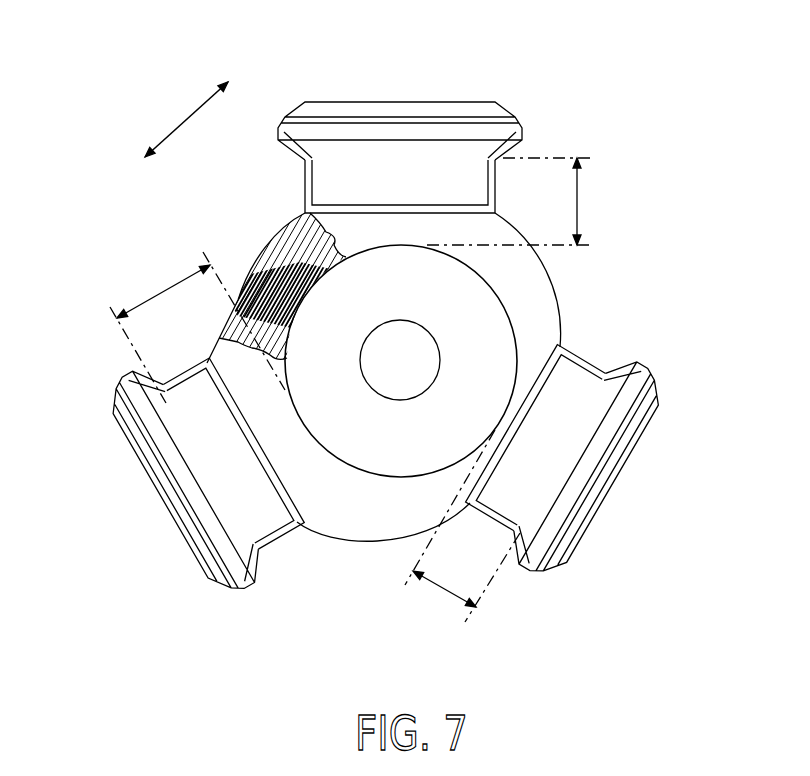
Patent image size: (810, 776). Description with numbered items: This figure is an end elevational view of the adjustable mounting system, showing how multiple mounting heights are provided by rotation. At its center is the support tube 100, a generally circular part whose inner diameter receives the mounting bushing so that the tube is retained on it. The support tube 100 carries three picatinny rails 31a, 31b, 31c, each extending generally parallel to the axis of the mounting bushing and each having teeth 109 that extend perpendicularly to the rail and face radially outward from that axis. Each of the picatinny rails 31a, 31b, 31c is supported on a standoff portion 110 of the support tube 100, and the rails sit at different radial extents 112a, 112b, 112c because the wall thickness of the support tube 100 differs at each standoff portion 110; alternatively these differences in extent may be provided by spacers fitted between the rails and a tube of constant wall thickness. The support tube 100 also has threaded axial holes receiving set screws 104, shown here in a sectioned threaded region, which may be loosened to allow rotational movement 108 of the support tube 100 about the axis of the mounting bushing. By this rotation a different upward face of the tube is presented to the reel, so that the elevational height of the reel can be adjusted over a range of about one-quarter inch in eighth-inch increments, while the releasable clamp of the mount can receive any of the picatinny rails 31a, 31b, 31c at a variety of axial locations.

The support tube 100 is at (535, 335).
The set screws 104 is at (260, 270).
The rotational movement 108 is at (183, 117).
The teeth 109 is at (487, 95).
The standoff portion 110 is at (395, 178).
The radial extent 112a is at (592, 196).
The radial extent 112b is at (441, 593).
The radial extent 112c is at (200, 267).
The picatinny rail 31a is at (453, 115).
The picatinny rail 31b is at (642, 430).
The picatinny rail 31c is at (190, 528).